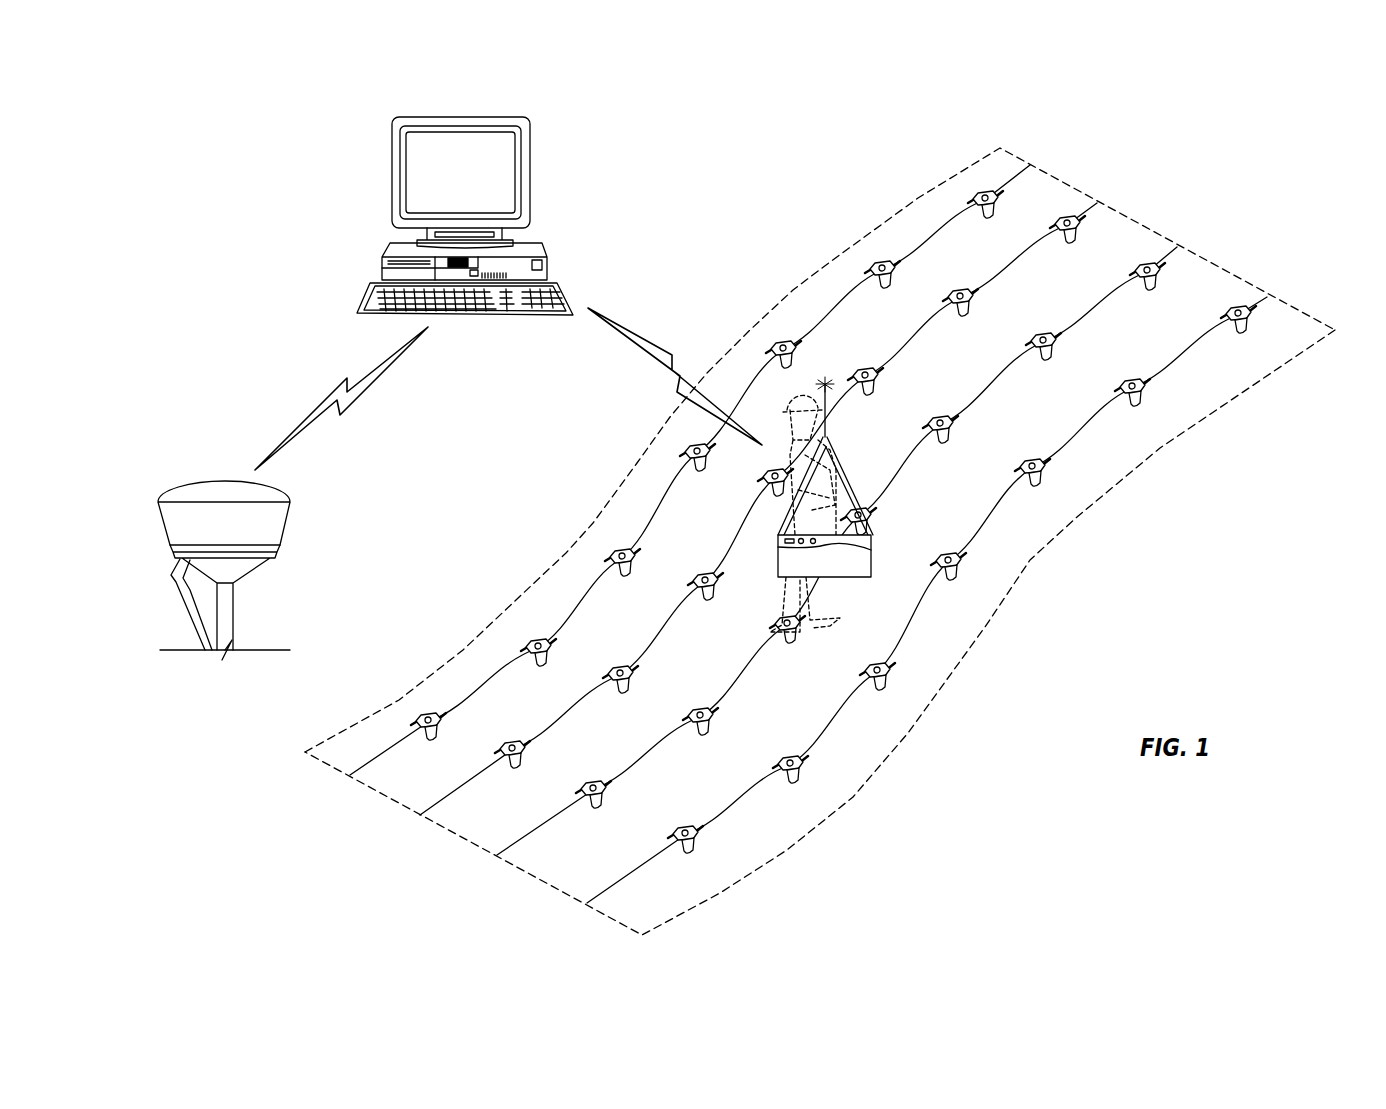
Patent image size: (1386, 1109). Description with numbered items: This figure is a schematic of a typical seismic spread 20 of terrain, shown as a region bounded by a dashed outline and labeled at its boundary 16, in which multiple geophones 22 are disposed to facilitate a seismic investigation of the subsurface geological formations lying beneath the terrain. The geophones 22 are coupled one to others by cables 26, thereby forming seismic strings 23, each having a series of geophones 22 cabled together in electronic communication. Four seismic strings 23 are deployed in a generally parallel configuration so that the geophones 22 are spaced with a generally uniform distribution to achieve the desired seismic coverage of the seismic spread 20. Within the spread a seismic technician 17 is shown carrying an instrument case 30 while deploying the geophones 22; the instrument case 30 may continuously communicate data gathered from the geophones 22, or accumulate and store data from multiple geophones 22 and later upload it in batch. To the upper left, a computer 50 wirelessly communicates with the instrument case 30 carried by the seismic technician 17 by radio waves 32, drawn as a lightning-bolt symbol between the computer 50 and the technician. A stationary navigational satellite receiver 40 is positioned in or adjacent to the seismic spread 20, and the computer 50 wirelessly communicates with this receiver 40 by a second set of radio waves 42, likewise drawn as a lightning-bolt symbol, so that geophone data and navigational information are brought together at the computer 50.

The survey area boundary 16 is at (907, 738).
The seismic technician 17 is at (777, 510).
The seismic spread 20 is at (838, 226).
The geophones 22 is at (1130, 403).
The seismic strings 23 is at (808, 534).
The cables 26 is at (912, 627).
The instrument case 30 is at (838, 372).
The radio waves 32 is at (638, 342).
The stationary navigational satellite receiver 40 is at (225, 482).
The radio waves 42 is at (328, 395).
The computer 50 is at (528, 172).